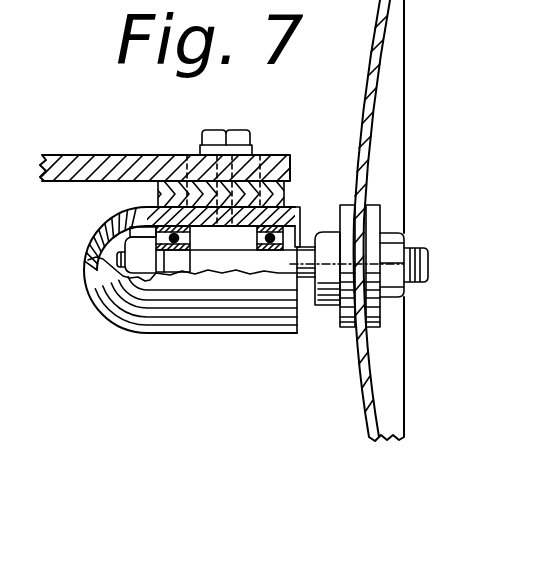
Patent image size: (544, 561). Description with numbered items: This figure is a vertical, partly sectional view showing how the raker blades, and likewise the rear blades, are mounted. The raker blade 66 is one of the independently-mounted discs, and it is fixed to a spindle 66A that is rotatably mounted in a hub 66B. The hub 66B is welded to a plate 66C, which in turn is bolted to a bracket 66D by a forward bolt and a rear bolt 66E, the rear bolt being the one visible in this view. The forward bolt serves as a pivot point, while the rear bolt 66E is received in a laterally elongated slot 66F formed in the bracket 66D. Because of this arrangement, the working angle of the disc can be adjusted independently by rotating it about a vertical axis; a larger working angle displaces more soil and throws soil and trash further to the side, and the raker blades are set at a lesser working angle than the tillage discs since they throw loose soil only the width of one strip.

The raker blade 66 is at (404, 80).
The spindle 66A is at (300, 283).
The hub 66B is at (230, 335).
The plate 66C is at (296, 185).
The bracket 66D is at (110, 155).
The rear bolt 66E is at (249, 104).
The laterally elongated slot 66F is at (265, 155).